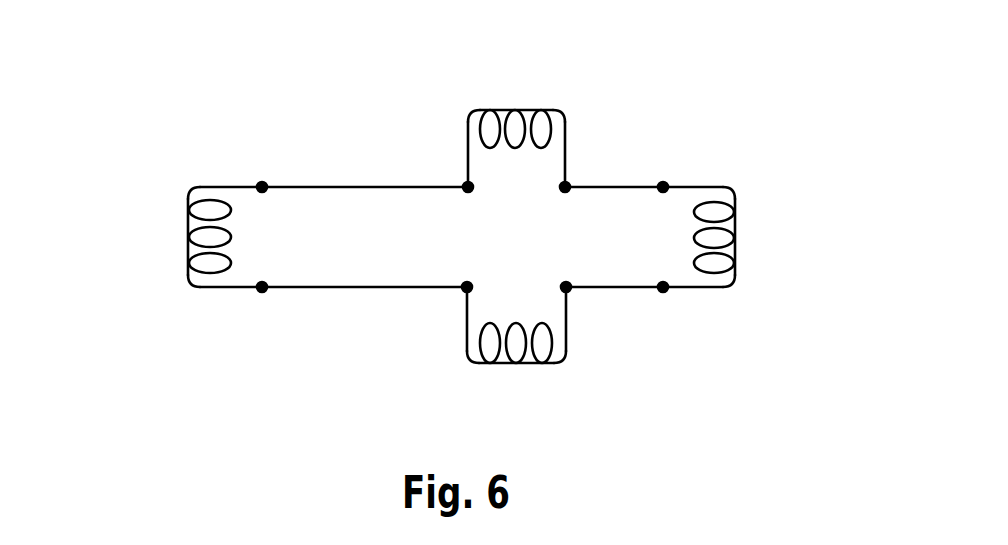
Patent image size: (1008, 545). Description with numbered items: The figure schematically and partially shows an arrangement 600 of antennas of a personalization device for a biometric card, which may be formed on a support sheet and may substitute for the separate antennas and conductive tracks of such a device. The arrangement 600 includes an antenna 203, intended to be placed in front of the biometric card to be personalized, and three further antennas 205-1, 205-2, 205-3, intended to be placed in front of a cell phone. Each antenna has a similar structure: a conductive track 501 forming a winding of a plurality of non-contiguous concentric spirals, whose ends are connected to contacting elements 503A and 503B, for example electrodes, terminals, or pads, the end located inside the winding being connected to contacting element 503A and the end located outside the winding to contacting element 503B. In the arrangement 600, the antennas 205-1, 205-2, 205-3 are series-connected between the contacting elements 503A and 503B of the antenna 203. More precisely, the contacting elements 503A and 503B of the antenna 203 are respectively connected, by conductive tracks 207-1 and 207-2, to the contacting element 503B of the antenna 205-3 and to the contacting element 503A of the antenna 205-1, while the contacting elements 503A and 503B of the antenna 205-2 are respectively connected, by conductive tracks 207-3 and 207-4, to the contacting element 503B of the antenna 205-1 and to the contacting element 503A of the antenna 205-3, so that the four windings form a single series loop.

The arrangement of antennas 600 is at (762, 123).
The antenna 203 is at (173, 240).
The antenna 205-1 is at (515, 105).
The antenna 205-2 is at (752, 242).
The antenna 205-3 is at (515, 368).
The conductive track 501 is at (192, 196).
The conductive track 207-1 is at (350, 290).
The conductive track 207-2 is at (352, 185).
The conductive track 207-3 is at (612, 185).
The conductive track 207-4 is at (612, 292).
The contacting element 503A is at (468, 193).
The contacting element 503B is at (262, 182).